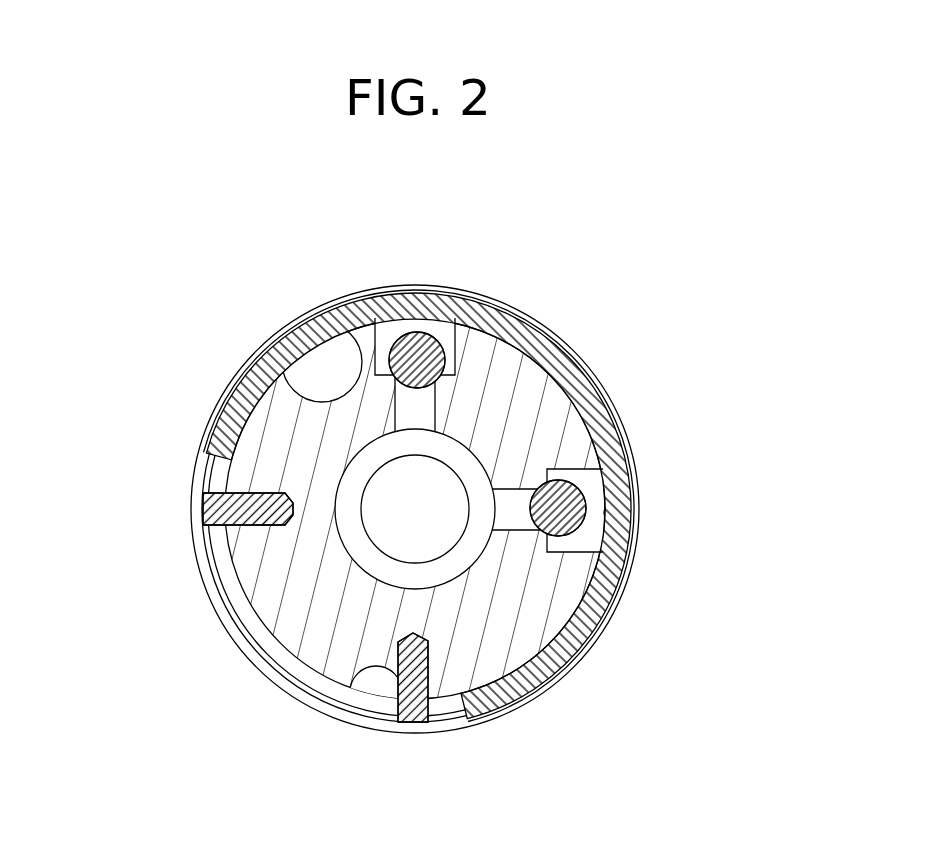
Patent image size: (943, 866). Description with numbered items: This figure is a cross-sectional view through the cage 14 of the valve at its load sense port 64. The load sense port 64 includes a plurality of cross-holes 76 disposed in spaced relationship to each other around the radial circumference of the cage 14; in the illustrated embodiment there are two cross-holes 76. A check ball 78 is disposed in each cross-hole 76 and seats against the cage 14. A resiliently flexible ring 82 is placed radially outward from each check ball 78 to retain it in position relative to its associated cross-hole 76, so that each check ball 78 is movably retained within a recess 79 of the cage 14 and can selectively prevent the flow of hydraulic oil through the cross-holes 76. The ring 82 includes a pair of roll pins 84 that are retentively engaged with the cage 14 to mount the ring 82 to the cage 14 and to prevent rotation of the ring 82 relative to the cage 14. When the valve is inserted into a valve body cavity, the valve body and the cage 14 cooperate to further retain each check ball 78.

The cage 14 is at (342, 302).
The load sense port 64 is at (652, 512).
The cross-holes 76 is at (547, 333).
The check ball 78 is at (418, 337).
The recess 79 is at (442, 330).
The resiliently flexible ring 82 is at (563, 667).
The roll pins 84 is at (252, 533).